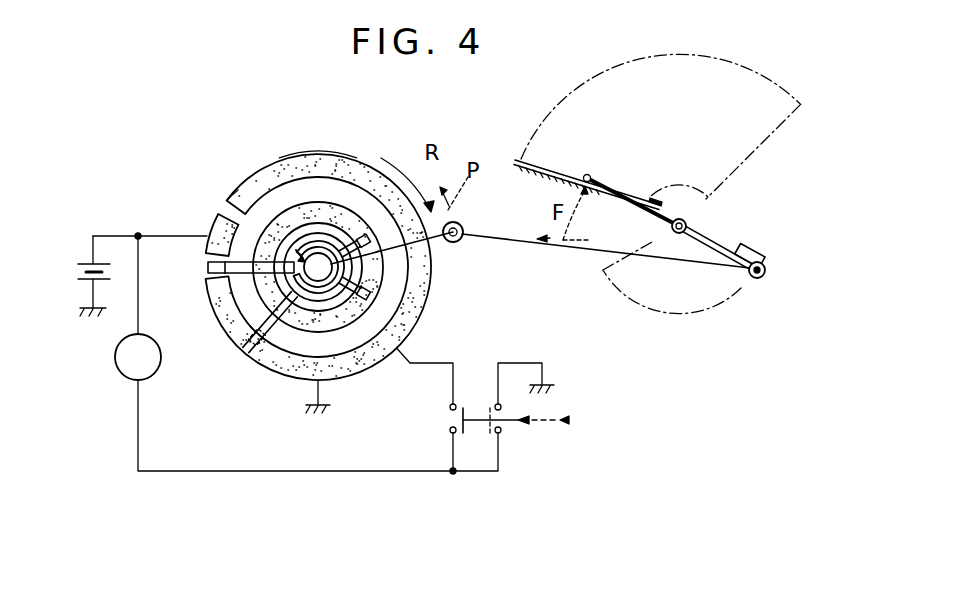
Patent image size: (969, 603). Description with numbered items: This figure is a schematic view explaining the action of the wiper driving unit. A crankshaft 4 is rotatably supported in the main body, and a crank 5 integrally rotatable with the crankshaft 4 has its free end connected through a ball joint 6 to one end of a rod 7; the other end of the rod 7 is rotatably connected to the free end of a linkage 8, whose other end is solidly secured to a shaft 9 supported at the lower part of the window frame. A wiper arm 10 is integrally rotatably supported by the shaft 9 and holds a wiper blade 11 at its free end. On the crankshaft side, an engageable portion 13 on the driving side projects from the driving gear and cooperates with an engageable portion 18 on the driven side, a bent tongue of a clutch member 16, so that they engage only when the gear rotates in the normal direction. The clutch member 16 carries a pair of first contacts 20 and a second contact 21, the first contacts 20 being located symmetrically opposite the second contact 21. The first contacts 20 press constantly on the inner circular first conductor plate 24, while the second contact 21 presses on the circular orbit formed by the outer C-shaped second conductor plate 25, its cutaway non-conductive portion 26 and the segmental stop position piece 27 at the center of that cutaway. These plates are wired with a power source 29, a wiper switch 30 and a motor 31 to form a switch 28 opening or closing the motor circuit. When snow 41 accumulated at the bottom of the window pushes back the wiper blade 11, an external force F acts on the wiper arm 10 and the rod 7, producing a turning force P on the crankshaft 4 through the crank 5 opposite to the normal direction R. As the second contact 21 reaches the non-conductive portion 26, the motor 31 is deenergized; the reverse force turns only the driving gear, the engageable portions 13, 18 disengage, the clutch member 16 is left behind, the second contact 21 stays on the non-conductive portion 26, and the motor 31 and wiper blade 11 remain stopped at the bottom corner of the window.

The crankshaft 4 is at (322, 275).
The crank 5 is at (447, 243).
The ball joint 6 is at (462, 225).
The rod 7 is at (545, 253).
The linkage 8 is at (748, 250).
The shaft 9 is at (688, 222).
The wiper arm 10 is at (653, 215).
The wiper blade 11 is at (540, 158).
The engageable portion on the driving side 13 is at (299, 250).
The clutch member 16 is at (227, 298).
The engageable portion on the driven side 18 is at (290, 252).
The first contacts 20 is at (363, 236).
The second contact 21 is at (207, 268).
The first conductor plate 24 is at (322, 205).
The second conductor plate 25 is at (350, 156).
The non-conductive portion 26 is at (232, 208).
The stop position piece 27 is at (207, 222).
The switch 28 is at (222, 186).
The power source 29 is at (85, 263).
The wiper switch 30 is at (505, 430).
The motor 31 is at (120, 372).
The snow 41 is at (537, 181).